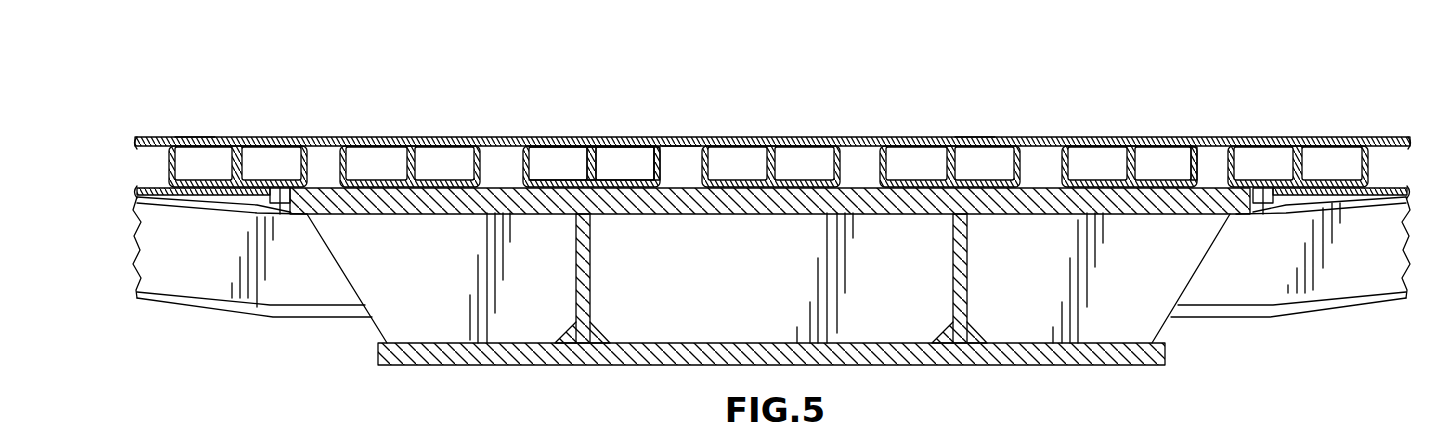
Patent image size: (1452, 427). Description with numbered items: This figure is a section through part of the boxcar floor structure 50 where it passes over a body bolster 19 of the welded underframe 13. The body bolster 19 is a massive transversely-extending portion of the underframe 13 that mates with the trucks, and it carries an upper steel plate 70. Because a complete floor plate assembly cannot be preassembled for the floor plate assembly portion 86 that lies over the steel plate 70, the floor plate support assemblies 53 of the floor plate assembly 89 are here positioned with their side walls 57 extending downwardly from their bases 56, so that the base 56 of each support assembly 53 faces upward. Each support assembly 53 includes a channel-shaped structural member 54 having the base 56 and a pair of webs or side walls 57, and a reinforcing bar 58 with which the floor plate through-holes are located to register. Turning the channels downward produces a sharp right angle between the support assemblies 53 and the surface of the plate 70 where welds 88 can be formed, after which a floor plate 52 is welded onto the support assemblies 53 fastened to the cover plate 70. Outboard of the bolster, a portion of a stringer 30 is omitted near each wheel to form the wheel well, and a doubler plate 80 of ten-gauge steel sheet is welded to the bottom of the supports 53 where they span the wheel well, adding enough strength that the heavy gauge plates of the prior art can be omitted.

The floor structure 50 is at (778, 148).
The floor plate 52 is at (266, 137).
The floor plate support assembly 53 is at (313, 162).
The structural member 54 is at (660, 137).
The base 56 is at (596, 137).
The side wall 57 is at (552, 137).
The reinforcing bar 58 is at (560, 186).
The upper steel plate 70 is at (755, 216).
The doubler plate 80 is at (160, 186).
The floor plate assembly portion 86 is at (977, 122).
The weld 88 is at (681, 137).
The floor plate assembly 89 is at (197, 120).
The stringer 30 is at (172, 287).
The body bolster 19 is at (1152, 323).
The underframe 13 is at (1253, 358).